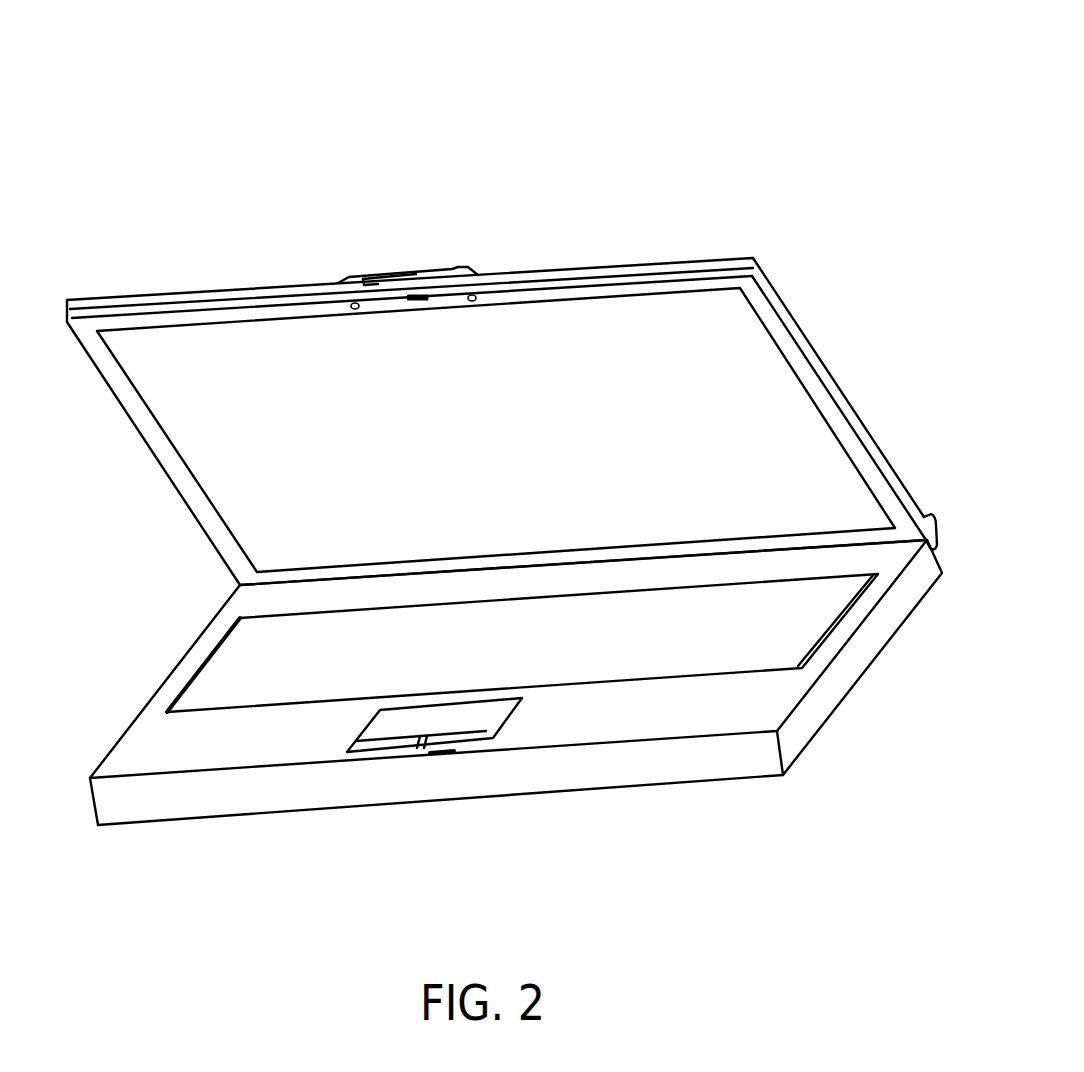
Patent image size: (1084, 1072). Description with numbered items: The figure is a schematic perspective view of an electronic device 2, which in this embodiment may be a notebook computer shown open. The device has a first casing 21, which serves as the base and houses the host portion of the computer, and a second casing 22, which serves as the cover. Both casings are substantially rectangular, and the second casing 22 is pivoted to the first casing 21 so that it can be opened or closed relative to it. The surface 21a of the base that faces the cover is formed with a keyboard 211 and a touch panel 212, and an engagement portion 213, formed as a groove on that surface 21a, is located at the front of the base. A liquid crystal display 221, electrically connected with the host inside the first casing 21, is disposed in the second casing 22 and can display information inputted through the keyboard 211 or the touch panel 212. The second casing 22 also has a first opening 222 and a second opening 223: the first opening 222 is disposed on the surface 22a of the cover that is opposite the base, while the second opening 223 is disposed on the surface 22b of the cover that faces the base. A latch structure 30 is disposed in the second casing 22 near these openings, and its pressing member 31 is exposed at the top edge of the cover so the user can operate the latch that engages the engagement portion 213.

The electronic device 2 is at (221, 64).
The first casing 21 is at (851, 724).
The surface 21a is at (150, 755).
The keyboard 211 is at (678, 655).
The touch panel 212 is at (462, 718).
The engagement portion 213 is at (450, 754).
The second casing 22 is at (791, 297).
The surface 22a is at (718, 257).
The surface 22b is at (547, 296).
The liquid crystal display 221 is at (750, 368).
The first opening 222 is at (452, 268).
The second opening 223 is at (415, 292).
The latch structure 30 is at (387, 273).
The pressing member 31 is at (370, 278).